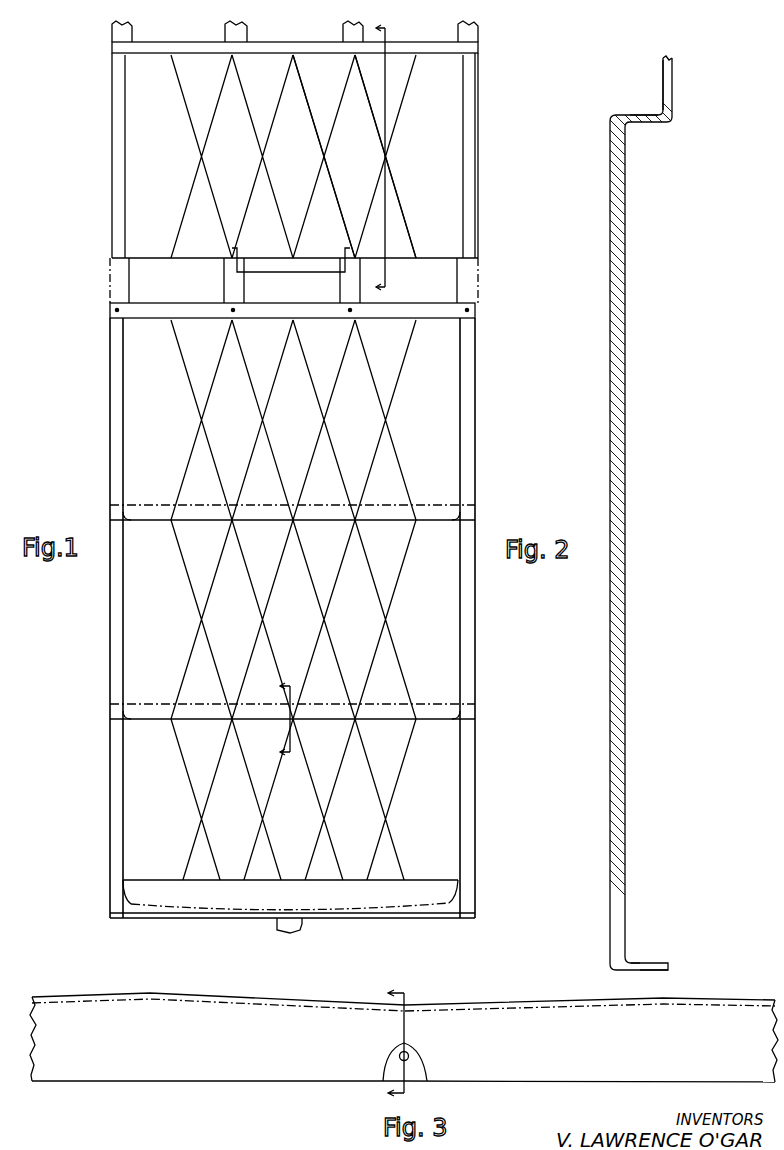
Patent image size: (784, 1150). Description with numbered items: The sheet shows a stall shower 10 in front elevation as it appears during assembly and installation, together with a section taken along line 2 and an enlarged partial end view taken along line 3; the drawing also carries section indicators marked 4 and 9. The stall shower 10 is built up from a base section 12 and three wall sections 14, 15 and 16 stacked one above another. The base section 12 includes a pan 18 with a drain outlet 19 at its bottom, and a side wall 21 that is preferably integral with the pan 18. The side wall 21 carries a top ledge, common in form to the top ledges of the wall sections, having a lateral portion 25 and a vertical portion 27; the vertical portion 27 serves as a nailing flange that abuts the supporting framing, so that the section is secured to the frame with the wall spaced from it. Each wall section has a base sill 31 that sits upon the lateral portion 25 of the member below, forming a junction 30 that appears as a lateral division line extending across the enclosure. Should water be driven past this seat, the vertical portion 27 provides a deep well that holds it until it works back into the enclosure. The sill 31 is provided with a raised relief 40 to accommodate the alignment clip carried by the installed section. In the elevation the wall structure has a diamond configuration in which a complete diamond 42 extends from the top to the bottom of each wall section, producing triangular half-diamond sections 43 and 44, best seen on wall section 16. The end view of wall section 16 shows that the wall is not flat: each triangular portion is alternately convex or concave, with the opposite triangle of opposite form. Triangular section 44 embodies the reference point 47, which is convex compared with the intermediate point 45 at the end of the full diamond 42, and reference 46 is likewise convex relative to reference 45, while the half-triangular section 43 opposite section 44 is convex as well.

In FIG. 1, the stall shower 10 is at (486, 651).
In FIG. 1, the base section 12 is at (444, 832).
In FIG. 1, the wall section 14 is at (444, 615).
In FIG. 1, the wall section 15 is at (447, 429).
In FIG. 1, the wall section 16 is at (452, 188).
In FIG. 1, the pan 18 is at (347, 890).
In FIG. 1, the drain outlet 19 is at (280, 933).
In FIG. 2, the side wall 21 is at (622, 212).
In FIG. 2, the lateral portion 25 is at (646, 121).
In FIG. 2, the vertical portion 27 is at (669, 97).
In FIG. 1, the junction 30 is at (310, 522).
In FIG. 2, the base sill 31 is at (638, 963).
In FIG. 2, the raised relief 40 is at (664, 962).
In FIG. 1, the complete diamond 42 is at (293, 156).
In FIG. 1, the triangular half-diamond section 43 is at (364, 156).
In FIG. 1, the triangular half-diamond section 44 is at (324, 156).
In FIG. 1, the intermediate point 45 is at (294, 262).
In FIG. 3, the intermediate point 45 is at (405, 1004).
In FIG. 1, the reference point 46 is at (263, 262).
In FIG. 3, the reference point 46 is at (143, 993).
In FIG. 1, the reference point 47 is at (325, 262).
In FIG. 3, the reference point 47 is at (663, 998).
In FIG. 1, the section line 2- 2 is at (373, 159).
In FIG. 1, the section line 3- 3 is at (291, 245).
In FIG. 1, the section line 4- 4 is at (276, 722).
In FIG. 3, the section line 9- 9 is at (388, 1046).